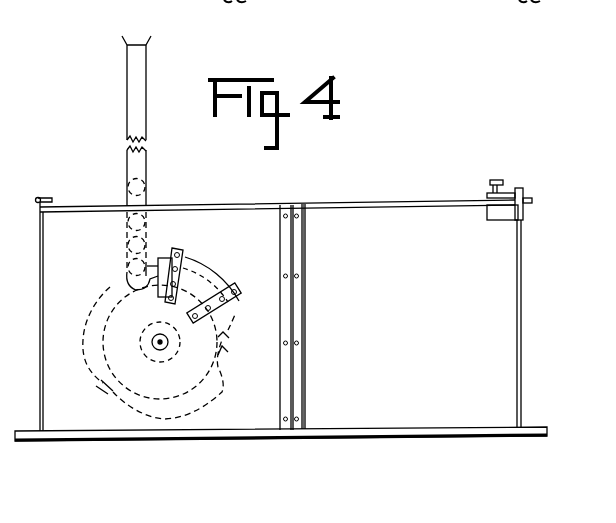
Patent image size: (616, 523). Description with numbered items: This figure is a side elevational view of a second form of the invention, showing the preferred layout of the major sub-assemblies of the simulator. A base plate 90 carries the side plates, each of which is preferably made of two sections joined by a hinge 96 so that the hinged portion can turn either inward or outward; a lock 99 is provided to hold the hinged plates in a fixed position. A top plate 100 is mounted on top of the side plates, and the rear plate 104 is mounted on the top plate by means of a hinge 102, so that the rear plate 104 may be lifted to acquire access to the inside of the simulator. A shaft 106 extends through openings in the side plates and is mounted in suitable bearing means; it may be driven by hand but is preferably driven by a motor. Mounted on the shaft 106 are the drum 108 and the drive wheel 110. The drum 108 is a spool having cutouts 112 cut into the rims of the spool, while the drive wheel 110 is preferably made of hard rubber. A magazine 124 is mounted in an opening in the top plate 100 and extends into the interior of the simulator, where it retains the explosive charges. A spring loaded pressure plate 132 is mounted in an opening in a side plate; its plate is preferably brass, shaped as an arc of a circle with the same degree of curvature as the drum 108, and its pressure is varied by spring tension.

The base plate 90 is at (547, 431).
The hinge 96 is at (297, 229).
The lock 99 is at (520, 197).
The top plate 100 is at (394, 203).
The hinge 102 is at (36, 203).
The rear plate 104 is at (40, 352).
The shaft 106 is at (159, 340).
The drum 108 is at (121, 397).
The drive wheel 110 is at (158, 362).
The cutouts 112 is at (224, 343).
The magazine 124 is at (147, 65).
The pressure plate 132 is at (213, 274).